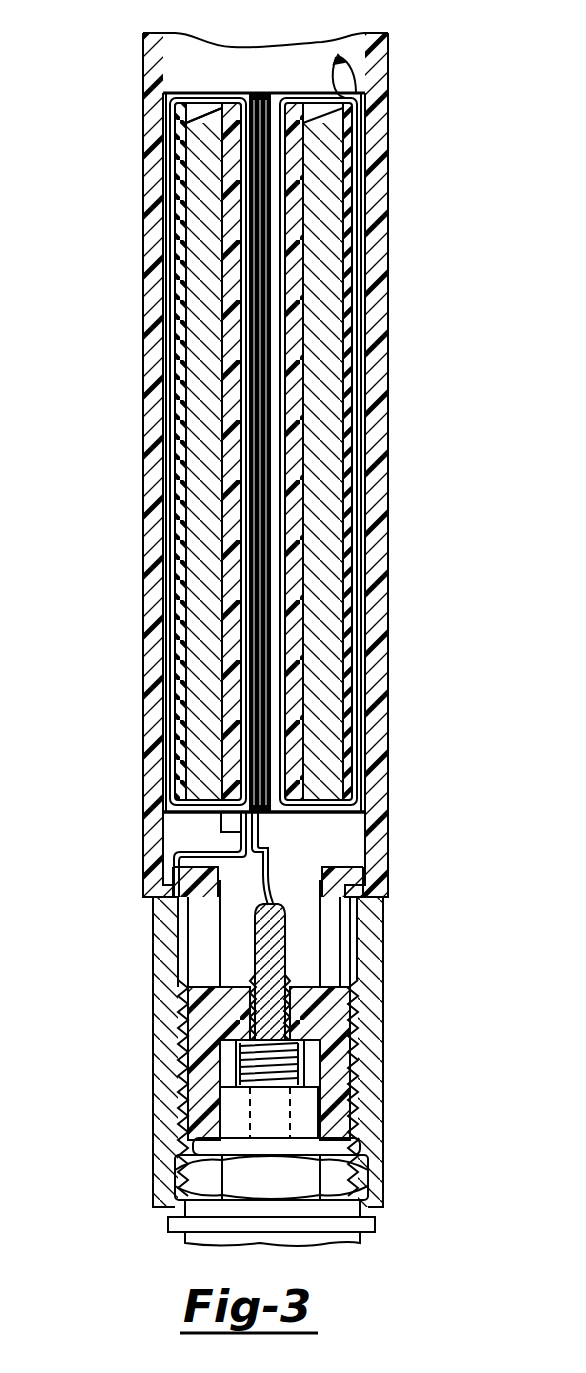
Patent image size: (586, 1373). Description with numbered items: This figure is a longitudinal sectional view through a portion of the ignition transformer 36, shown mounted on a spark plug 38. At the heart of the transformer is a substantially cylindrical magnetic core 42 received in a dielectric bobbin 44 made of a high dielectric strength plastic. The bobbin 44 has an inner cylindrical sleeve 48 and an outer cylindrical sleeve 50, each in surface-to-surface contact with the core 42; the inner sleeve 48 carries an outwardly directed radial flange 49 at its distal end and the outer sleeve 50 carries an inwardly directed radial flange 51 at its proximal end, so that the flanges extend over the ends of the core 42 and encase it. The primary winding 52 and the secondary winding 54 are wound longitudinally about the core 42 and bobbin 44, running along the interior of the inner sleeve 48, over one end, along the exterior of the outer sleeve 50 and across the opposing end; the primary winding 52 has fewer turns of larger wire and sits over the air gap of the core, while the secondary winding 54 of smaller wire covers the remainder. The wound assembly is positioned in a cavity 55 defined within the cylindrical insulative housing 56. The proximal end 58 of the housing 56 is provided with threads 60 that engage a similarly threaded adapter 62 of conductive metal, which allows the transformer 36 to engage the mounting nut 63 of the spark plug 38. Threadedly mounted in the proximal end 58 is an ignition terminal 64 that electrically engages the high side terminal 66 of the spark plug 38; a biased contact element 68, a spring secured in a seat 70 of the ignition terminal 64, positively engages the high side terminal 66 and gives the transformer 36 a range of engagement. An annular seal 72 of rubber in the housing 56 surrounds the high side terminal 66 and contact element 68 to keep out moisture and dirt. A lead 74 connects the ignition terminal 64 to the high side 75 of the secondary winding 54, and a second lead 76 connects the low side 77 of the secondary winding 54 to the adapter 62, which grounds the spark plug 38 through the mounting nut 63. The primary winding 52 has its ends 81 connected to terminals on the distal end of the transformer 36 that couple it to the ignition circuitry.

The ignition transformer 36 is at (142, 188).
The spark plug 38 is at (313, 1147).
The magnetic core 42 is at (196, 275).
The dielectric bobbin 44 is at (166, 386).
The inner cylindrical sleeve 48 is at (223, 227).
The outwardly directed radial flange 49 is at (212, 107).
The outer cylindrical sleeve 50 is at (173, 110).
The inwardly directed radial flange 51 is at (210, 800).
The primary winding 52 is at (303, 97).
The secondary winding 54 is at (255, 100).
The cavity 55 is at (175, 36).
The insulative housing 56 is at (375, 147).
The proximal end of the housing 58 is at (335, 920).
The threads 60 is at (353, 1022).
The adapter 62 is at (160, 945).
The mounting nut 63 is at (340, 1182).
The ignition terminal 64 is at (253, 923).
The high side terminal 66 is at (235, 1114).
The biased contact element 68 is at (237, 1043).
The seat 70 is at (355, 1055).
The annular seal 72 is at (227, 1063).
The lead 74 is at (263, 865).
The high side of the secondary winding 75 is at (257, 830).
The second lead 76 is at (205, 856).
The low side of the secondary winding 77 is at (208, 826).
The ends of the primary winding 81 is at (353, 70).